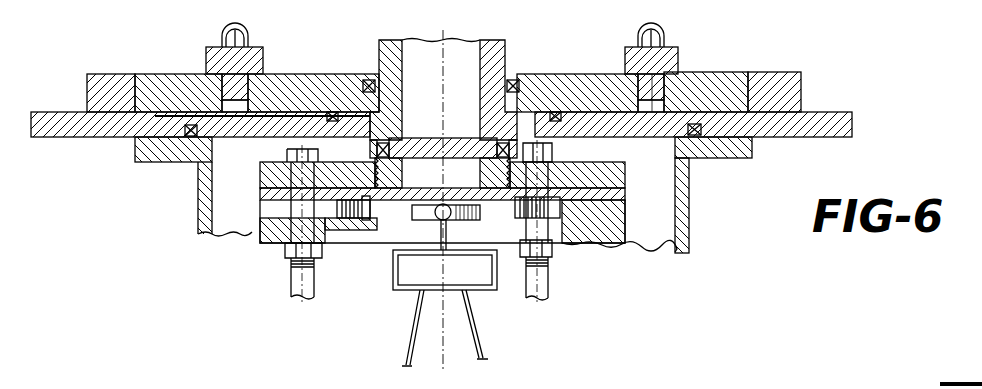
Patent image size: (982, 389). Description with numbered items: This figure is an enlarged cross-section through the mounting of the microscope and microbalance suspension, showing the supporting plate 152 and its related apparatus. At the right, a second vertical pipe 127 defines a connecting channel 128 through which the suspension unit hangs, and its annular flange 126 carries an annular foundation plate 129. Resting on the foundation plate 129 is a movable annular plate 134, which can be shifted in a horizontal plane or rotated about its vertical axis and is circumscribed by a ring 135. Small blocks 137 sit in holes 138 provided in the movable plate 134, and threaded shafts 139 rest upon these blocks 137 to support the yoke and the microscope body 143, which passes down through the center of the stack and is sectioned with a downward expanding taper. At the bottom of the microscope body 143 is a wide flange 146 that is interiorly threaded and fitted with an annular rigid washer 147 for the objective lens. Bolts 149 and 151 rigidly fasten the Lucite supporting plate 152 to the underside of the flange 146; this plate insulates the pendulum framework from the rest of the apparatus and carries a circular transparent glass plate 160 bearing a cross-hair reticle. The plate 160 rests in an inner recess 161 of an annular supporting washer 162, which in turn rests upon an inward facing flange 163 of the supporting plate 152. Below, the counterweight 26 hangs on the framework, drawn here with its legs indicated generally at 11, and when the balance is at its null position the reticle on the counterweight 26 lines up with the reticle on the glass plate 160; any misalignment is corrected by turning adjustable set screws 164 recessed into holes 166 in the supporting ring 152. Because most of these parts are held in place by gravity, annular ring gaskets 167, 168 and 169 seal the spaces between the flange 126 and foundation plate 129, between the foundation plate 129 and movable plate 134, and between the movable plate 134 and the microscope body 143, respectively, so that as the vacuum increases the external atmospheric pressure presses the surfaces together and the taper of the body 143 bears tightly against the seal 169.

The bracket leg assembly 11 is at (402, 335).
The counterweight 26 is at (425, 222).
The annular flange 126 is at (748, 157).
The second vertical pipe 127 is at (688, 228).
The connecting channel 128 is at (676, 250).
The annular foundation plate 129 is at (840, 112).
The annular plate 134 is at (732, 72).
The ring 135 is at (782, 72).
The small blocks 137 is at (262, 52).
The holes 138 is at (658, 103).
The threaded shafts 139 is at (222, 37).
The microscope body 143 is at (496, 35).
The wide flange 146 is at (266, 163).
The annular rigid washer 147 is at (376, 168).
The bolt 149 is at (297, 284).
The bolt 151 is at (548, 285).
The annular supporting plate 152 is at (282, 243).
The transparent plate 160 is at (477, 196).
The inner recess 161 is at (551, 154).
The annular supporting washer 162 is at (366, 220).
The inward facing flange 163 is at (515, 228).
The adjustable set screws 164 is at (347, 220).
The holes 166 is at (278, 212).
The annular ring gasket 167 is at (190, 137).
The annular ring gasket 168 is at (332, 112).
The annular ring gasket 169 is at (369, 80).